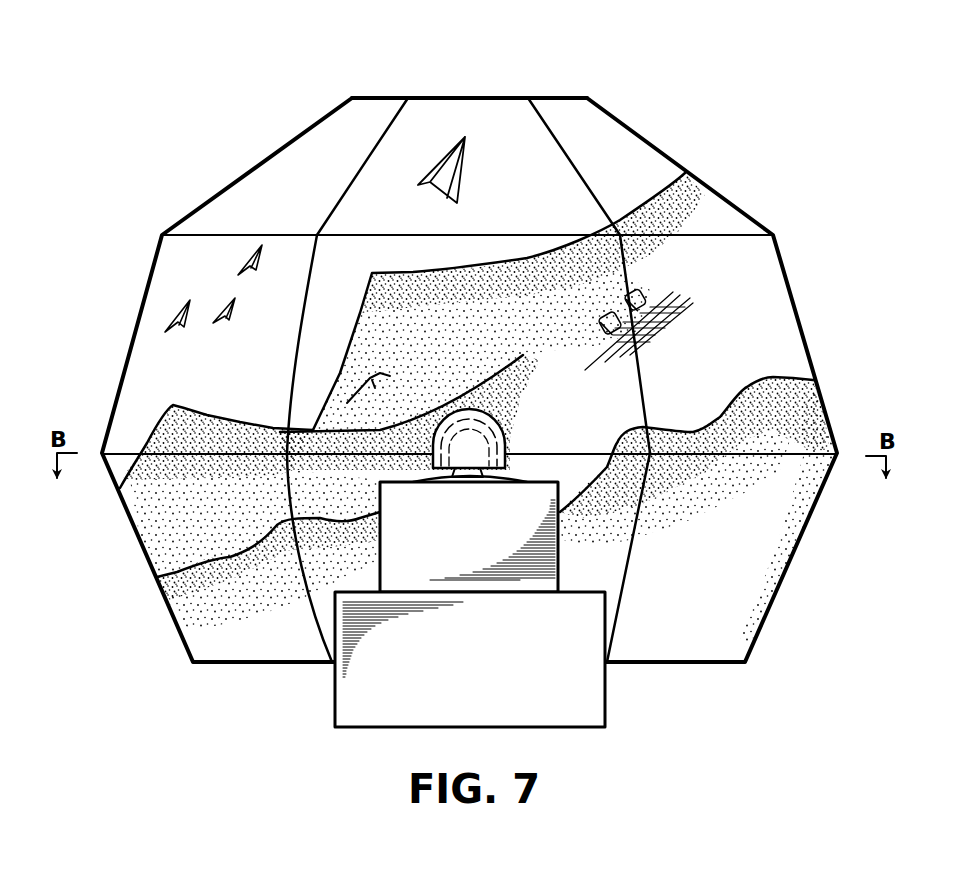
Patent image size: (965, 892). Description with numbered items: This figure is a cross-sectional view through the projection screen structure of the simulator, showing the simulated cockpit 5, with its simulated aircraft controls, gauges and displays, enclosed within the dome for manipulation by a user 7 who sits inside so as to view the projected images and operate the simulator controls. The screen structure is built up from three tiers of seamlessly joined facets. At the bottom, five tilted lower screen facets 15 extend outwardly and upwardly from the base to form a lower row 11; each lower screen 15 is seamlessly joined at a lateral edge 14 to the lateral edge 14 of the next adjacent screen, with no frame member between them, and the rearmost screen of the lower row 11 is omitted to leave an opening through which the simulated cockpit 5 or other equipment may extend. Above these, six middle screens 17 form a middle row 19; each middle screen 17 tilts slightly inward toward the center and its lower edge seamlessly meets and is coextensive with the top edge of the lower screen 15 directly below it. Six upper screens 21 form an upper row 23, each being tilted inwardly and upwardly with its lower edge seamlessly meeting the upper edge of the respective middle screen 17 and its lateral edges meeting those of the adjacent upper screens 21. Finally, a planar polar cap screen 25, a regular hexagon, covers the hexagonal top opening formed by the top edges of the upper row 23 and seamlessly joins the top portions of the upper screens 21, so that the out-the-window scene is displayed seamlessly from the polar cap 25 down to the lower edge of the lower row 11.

The simulated cockpit 5 is at (537, 703).
The user 7 is at (520, 434).
The lower row 11 is at (848, 566).
The lateral edge 14 is at (312, 600).
The lower screen facets 15 is at (190, 623).
The middle screens 17 is at (148, 363).
The middle row 19 is at (877, 338).
The upper screens 21 is at (288, 162).
The upper row 23 is at (791, 166).
The polar cap screen 25 is at (468, 97).